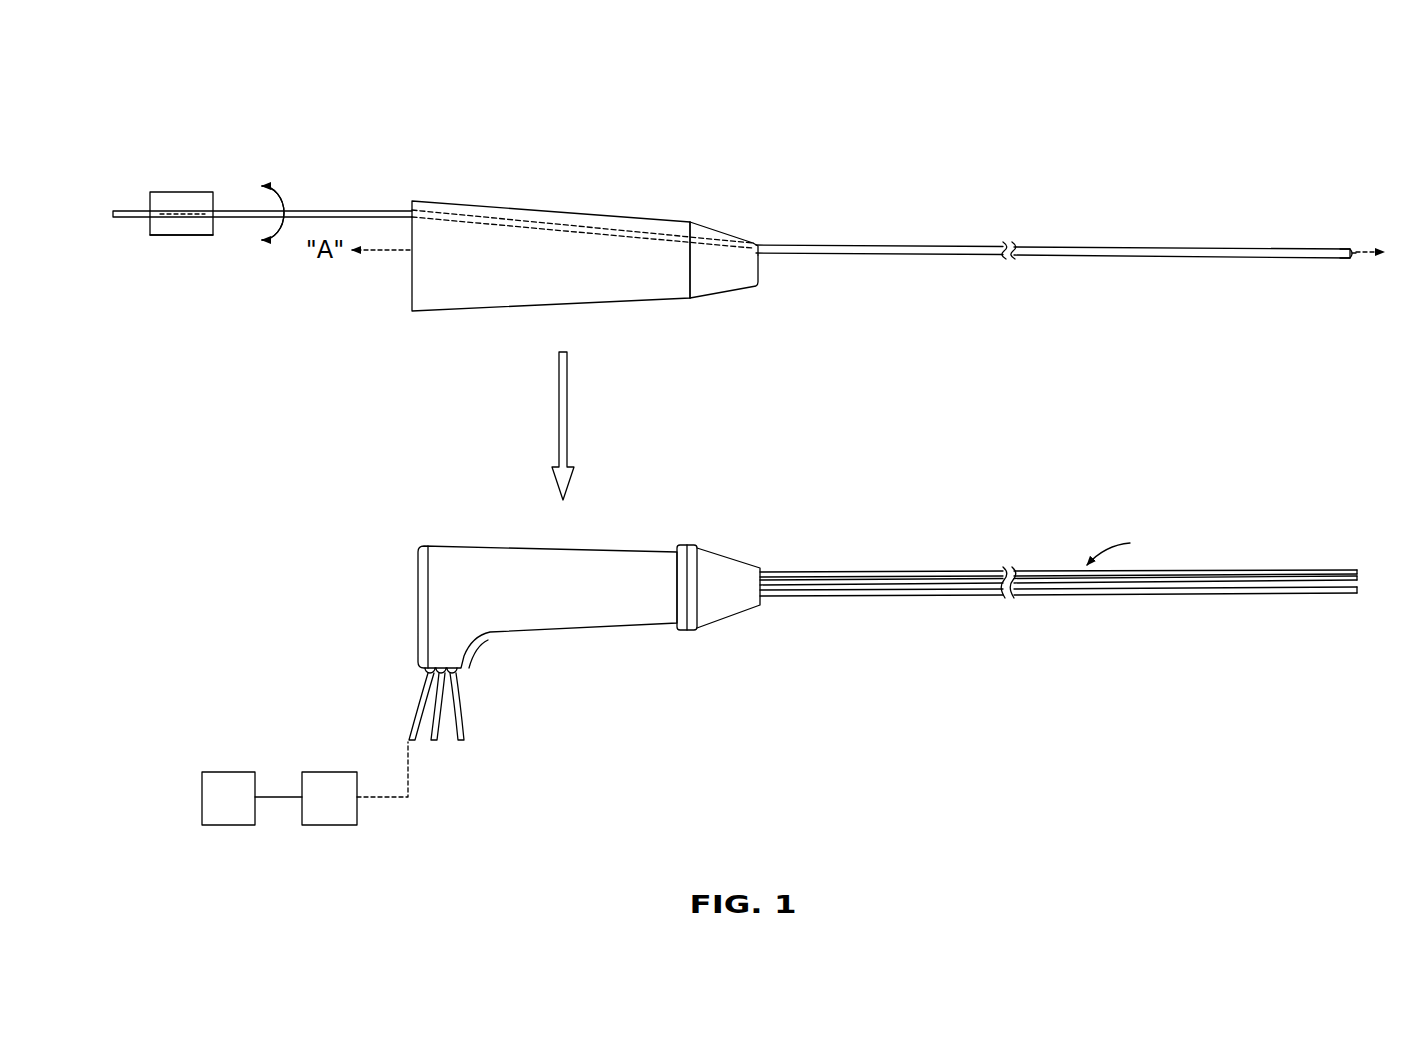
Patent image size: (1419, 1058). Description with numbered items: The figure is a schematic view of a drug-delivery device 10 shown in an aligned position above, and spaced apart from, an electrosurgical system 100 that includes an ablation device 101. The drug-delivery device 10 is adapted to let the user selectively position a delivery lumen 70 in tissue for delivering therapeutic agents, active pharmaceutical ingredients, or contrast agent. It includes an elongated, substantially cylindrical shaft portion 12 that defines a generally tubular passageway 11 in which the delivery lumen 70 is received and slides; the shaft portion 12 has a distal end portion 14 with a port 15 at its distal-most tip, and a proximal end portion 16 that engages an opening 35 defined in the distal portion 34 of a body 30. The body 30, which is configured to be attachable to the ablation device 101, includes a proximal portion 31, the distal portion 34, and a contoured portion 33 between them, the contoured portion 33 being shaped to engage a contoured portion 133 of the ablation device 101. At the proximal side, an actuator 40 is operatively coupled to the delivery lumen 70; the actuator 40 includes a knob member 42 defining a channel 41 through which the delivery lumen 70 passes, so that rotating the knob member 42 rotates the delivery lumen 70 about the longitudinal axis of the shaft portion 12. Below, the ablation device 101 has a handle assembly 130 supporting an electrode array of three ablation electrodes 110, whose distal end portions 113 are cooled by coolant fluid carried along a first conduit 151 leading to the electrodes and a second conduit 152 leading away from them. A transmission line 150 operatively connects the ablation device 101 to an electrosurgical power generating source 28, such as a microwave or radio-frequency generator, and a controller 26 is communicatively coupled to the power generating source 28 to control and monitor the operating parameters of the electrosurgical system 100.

The drug-delivery device 10 is at (1087, 192).
The passageway 11 is at (905, 244).
The shaft portion 12 is at (1052, 234).
The distal end portion 14 is at (1347, 250).
The port 15 is at (1362, 247).
The proximal end portion 16 is at (768, 256).
The body 30 is at (621, 257).
The proximal portion 31 is at (595, 298).
The contoured portion 33 is at (691, 303).
The distal portion 34 is at (720, 228).
The opening 35 is at (763, 240).
The actuator 40 is at (179, 199).
The channel 41 is at (193, 226).
The knob member 42 is at (168, 238).
The delivery lumen 70 is at (135, 210).
The electrosurgical system 100 is at (527, 622).
The ablation device 101 is at (1089, 561).
The ablation electrodes 110 is at (940, 571).
The distal end portion 113 is at (1345, 571).
The handle assembly 130 is at (613, 528).
The contoured portion 133 is at (690, 637).
The transmission line 150 is at (418, 718).
The first conduit 151 is at (466, 716).
The second conduit 152 is at (439, 742).
The controller 26 is at (252, 798).
The electrosurgical power generating source 28 is at (355, 783).